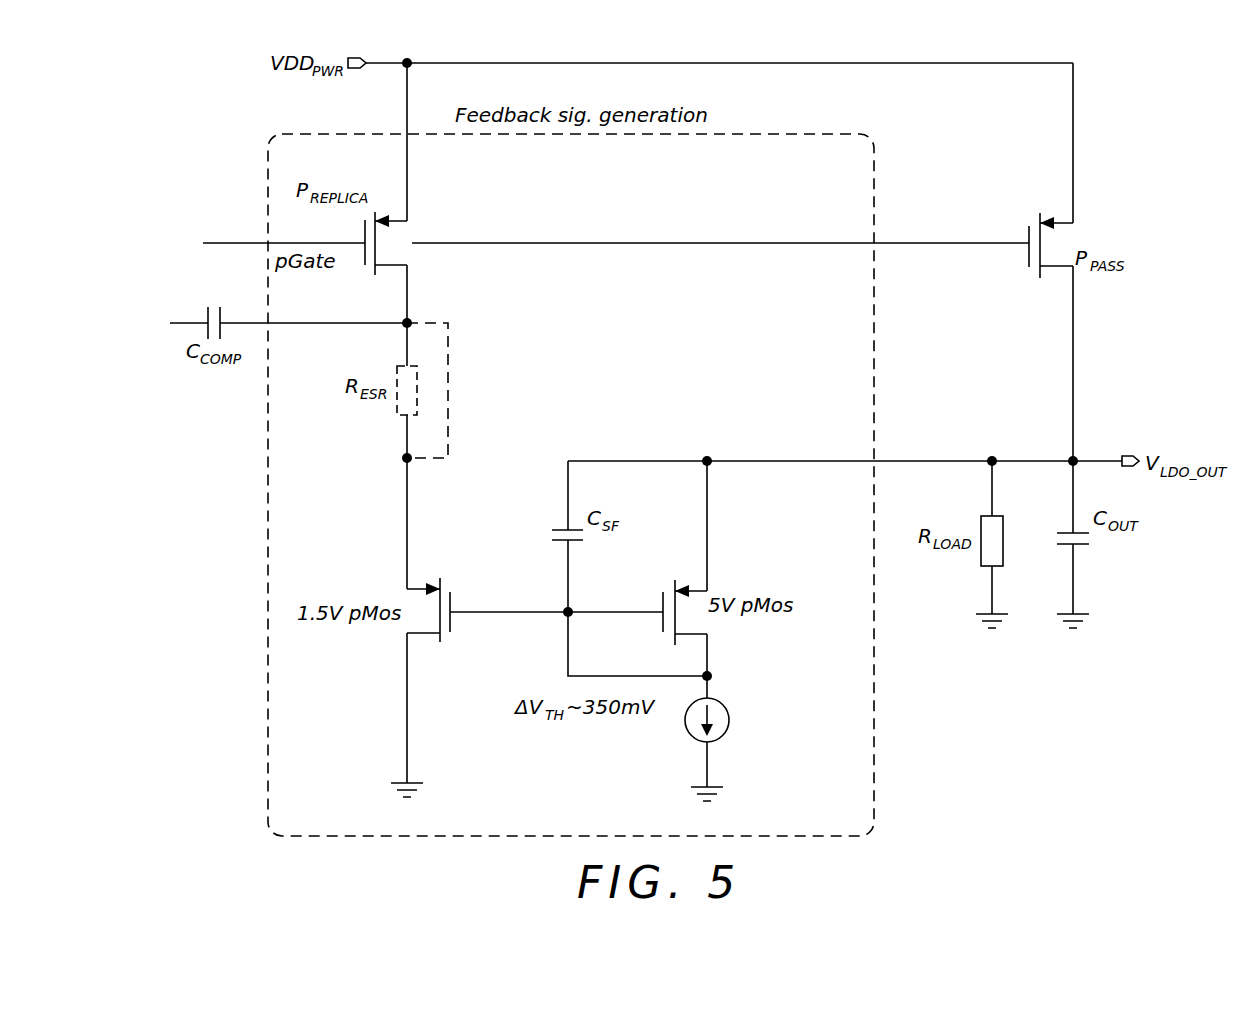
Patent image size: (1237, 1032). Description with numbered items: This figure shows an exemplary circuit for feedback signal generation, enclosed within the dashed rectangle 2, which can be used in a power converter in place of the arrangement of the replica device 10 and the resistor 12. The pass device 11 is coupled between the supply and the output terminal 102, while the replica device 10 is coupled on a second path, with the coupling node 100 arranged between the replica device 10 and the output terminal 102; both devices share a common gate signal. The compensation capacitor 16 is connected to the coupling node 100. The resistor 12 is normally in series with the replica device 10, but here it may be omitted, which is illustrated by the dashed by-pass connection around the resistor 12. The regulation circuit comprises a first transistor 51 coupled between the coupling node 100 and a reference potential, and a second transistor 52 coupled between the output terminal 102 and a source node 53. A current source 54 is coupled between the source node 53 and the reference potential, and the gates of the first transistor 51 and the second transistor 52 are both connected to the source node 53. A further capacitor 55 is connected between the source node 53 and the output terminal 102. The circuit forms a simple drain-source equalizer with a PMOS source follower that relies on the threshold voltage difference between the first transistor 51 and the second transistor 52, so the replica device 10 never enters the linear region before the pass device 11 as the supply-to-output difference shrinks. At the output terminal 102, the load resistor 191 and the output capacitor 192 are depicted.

The dashed rectangle 2 is at (834, 134).
The replica device 10 is at (407, 234).
The coupling node 100 is at (410, 318).
The resistor 12 is at (395, 412).
The compensation capacitor 16 is at (205, 313).
The pass device 11 is at (1067, 238).
The output terminal 102 is at (1124, 455).
The first transistor 51 is at (418, 648).
The second transistor 52 is at (708, 618).
The source node 53 is at (720, 678).
The current source 54 is at (730, 722).
The further capacitor 55 is at (592, 538).
The load resistor 191 is at (980, 556).
The output capacitor 192 is at (1095, 540).